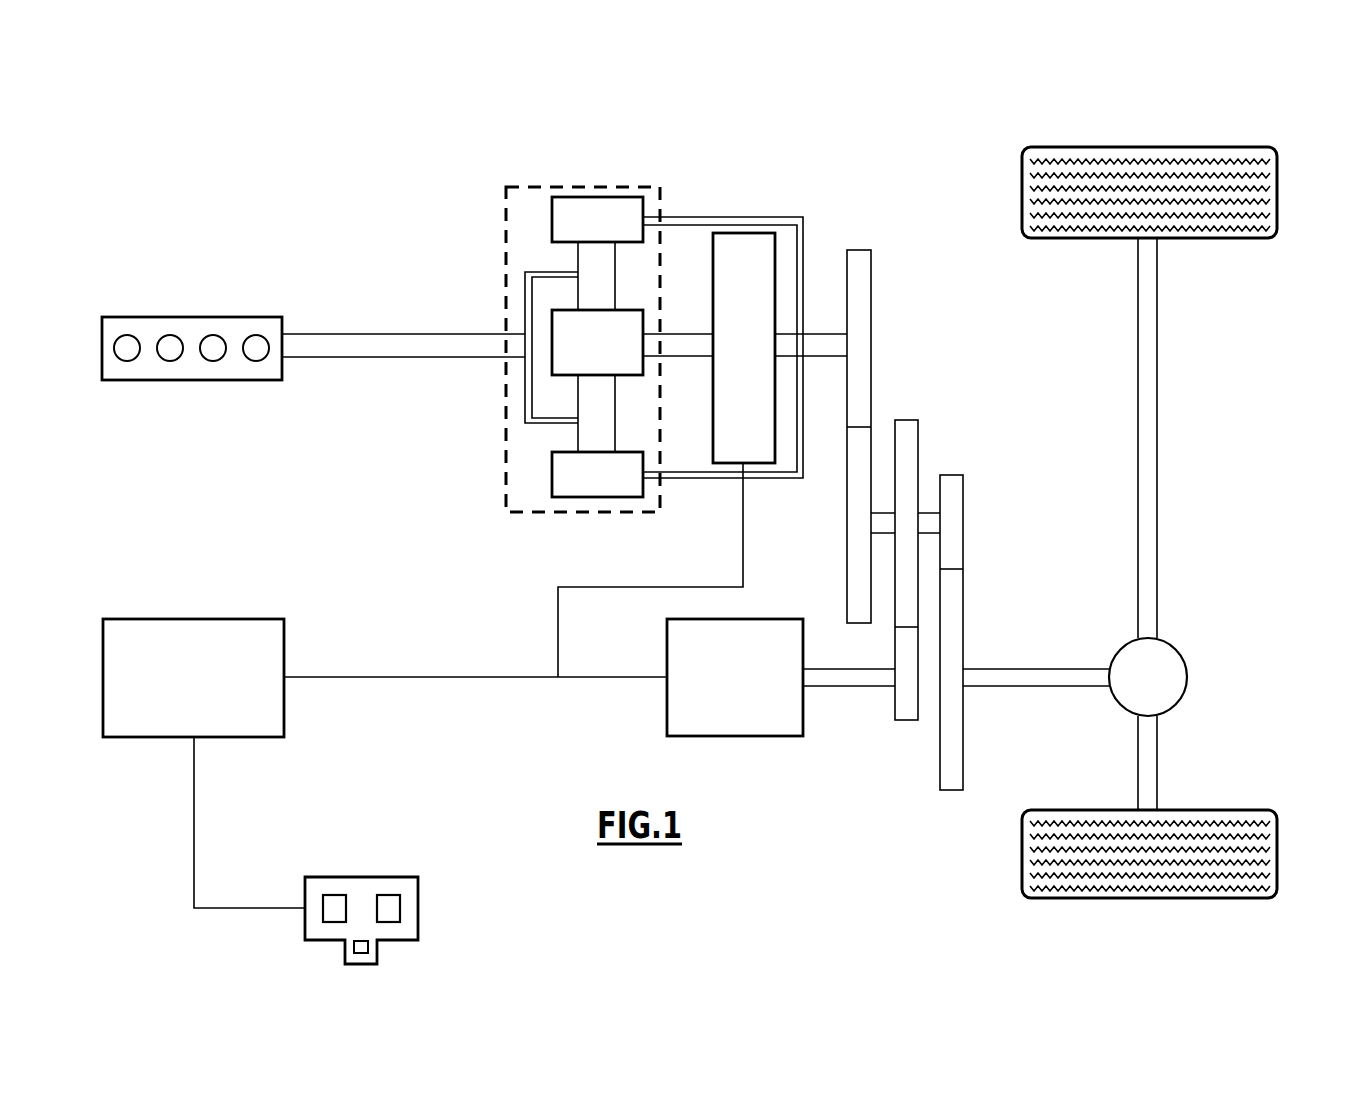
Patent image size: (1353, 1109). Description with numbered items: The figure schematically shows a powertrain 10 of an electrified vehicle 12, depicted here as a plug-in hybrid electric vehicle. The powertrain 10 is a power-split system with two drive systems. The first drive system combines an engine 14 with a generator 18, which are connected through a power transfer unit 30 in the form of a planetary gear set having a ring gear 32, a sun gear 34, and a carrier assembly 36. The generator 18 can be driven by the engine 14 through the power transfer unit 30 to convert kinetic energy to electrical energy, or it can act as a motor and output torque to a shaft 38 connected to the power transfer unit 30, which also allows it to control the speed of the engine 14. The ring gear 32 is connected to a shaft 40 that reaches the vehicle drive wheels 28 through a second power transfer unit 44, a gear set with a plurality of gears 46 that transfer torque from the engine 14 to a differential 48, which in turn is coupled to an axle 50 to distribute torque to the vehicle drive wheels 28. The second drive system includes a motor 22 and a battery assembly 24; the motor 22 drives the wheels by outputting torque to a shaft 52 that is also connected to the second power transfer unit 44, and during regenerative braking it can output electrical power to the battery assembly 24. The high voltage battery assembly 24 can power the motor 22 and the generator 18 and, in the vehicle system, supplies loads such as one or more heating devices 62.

The powertrain 10 is at (343, 208).
The electrified vehicle 12 is at (770, 136).
The engine 14 is at (122, 317).
The generator 18 is at (718, 233).
The motor 22 is at (806, 720).
The battery assembly 24 is at (124, 619).
The vehicle drive wheels 28 is at (1133, 147).
The power transfer unit 30 is at (507, 470).
The ring gear 32 is at (552, 219).
The sun gear 34 is at (552, 318).
The carrier assembly 36 is at (525, 405).
The shaft 38 is at (679, 333).
The shaft 40 is at (823, 333).
The second power transfer unit 44 is at (950, 375).
The gears 46 is at (871, 387).
The differential 48 is at (1180, 697).
The axle 50 is at (1160, 425).
The shaft 52 is at (860, 687).
The heating devices 62 is at (418, 895).